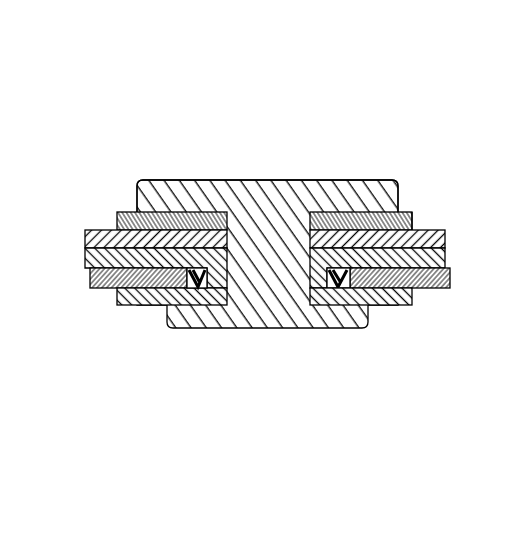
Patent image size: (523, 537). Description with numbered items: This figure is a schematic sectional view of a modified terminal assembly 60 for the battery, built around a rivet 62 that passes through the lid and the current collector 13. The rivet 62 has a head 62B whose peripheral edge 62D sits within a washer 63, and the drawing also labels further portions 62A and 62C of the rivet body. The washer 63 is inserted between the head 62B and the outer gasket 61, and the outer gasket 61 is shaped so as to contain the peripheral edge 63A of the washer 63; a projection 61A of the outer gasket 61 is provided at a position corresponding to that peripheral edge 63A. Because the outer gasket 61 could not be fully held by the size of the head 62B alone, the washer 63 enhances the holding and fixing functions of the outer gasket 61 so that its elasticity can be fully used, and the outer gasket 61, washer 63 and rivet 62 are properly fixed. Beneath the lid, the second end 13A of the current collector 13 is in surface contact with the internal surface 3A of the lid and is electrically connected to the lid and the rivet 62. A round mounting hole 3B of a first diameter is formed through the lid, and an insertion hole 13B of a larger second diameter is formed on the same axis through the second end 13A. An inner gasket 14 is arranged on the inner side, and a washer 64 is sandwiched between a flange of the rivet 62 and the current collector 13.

The semiconductor device 60 is at (273, 84).
The rivet 62 is at (305, 124).
The central portion of sealing resin 62A is at (235, 257).
The head of rivet 62B is at (197, 203).
The right portion of sealing resin 62C is at (228, 302).
The peripheral edge of head 62D is at (400, 198).
The outer gasket 61 is at (92, 230).
The projection of outer gasket 61A is at (113, 227).
The washer 63 is at (413, 213).
The peripheral edge of washer 63A is at (414, 219).
The internal surface of lid 3A is at (90, 280).
The mounting hole 3B is at (217, 282).
The current collector 13 is at (160, 323).
The second end of current collector 13A is at (158, 304).
The insertion hole 13B is at (193, 289).
The inner gasket 14 is at (328, 289).
The washer 64 is at (397, 306).